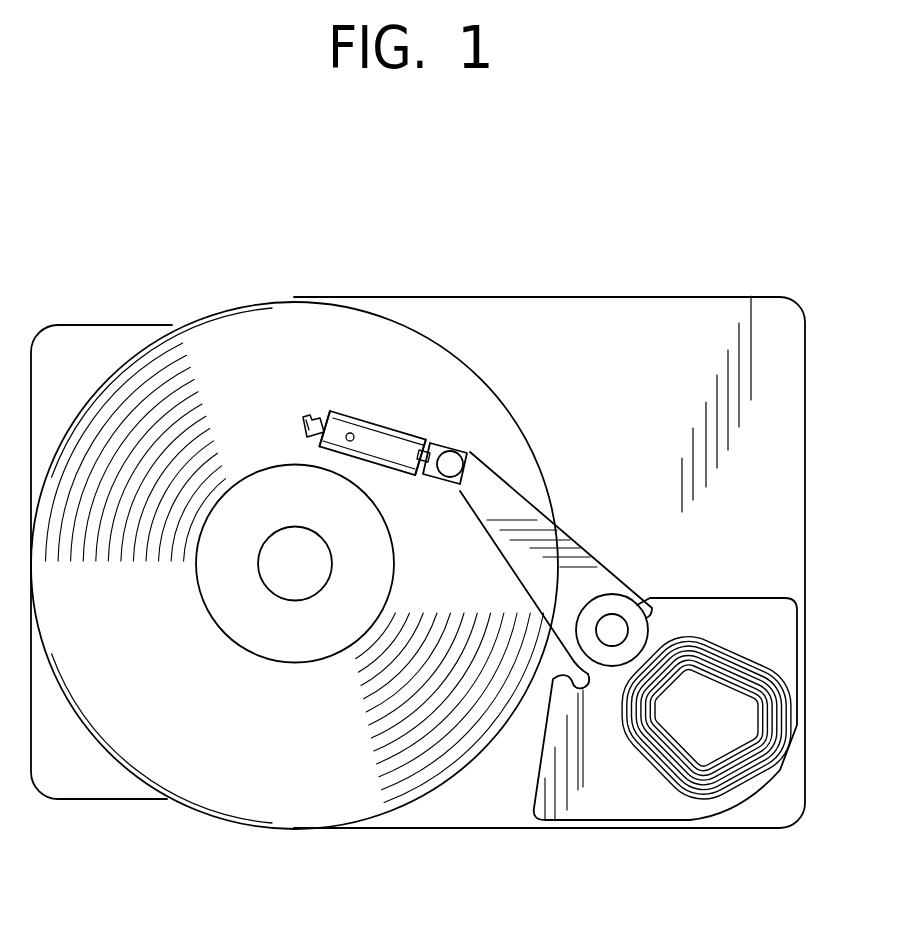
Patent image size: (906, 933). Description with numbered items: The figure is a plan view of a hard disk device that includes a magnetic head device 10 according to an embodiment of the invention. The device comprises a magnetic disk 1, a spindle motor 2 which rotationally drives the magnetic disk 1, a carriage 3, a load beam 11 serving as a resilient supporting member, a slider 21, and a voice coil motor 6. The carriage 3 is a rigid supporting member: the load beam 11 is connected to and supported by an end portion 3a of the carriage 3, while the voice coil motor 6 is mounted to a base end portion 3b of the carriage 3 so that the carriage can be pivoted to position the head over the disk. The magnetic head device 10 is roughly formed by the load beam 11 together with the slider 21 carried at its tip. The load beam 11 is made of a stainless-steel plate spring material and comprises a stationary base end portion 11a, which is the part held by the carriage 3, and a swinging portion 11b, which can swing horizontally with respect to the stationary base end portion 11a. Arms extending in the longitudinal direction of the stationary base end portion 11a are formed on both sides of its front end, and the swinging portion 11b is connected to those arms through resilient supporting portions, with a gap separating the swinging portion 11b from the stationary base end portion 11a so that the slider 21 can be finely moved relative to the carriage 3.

The magnetic disk 1 is at (245, 385).
The spindle motor 2 is at (293, 570).
The carriage 3 is at (580, 553).
The end portion of the carriage 3a is at (473, 477).
The base end portion of the carriage 3b is at (650, 628).
The voice coil motor 6 is at (603, 787).
The magnetic head device 10 is at (449, 343).
The load beam 11 is at (451, 356).
The stationary base end portion 11a is at (320, 417).
The swinging portion 11b is at (457, 447).
The slider 21 is at (300, 418).